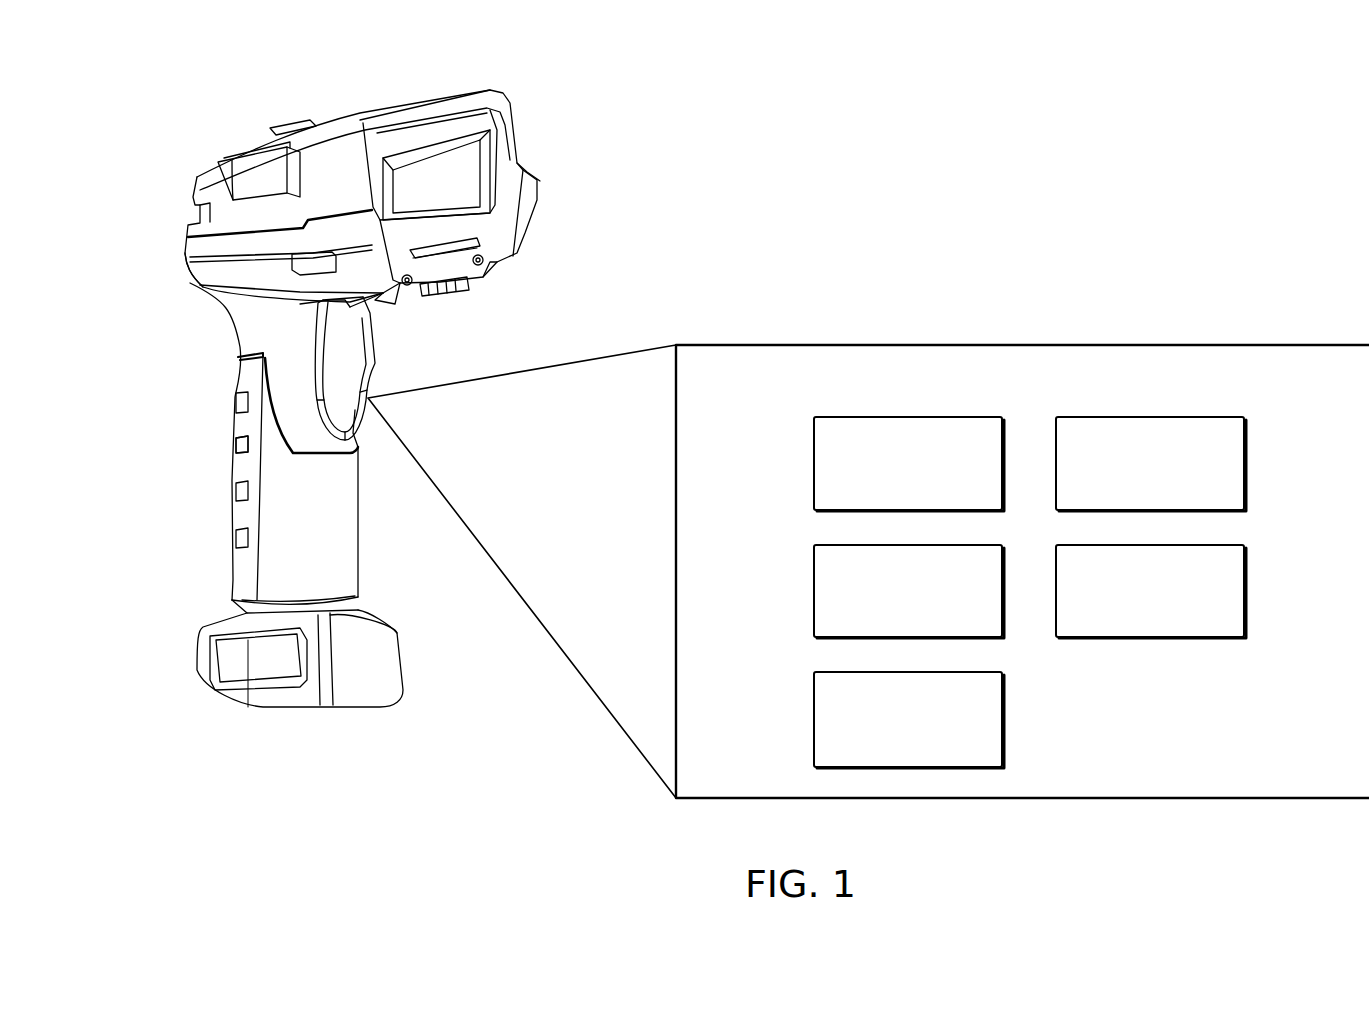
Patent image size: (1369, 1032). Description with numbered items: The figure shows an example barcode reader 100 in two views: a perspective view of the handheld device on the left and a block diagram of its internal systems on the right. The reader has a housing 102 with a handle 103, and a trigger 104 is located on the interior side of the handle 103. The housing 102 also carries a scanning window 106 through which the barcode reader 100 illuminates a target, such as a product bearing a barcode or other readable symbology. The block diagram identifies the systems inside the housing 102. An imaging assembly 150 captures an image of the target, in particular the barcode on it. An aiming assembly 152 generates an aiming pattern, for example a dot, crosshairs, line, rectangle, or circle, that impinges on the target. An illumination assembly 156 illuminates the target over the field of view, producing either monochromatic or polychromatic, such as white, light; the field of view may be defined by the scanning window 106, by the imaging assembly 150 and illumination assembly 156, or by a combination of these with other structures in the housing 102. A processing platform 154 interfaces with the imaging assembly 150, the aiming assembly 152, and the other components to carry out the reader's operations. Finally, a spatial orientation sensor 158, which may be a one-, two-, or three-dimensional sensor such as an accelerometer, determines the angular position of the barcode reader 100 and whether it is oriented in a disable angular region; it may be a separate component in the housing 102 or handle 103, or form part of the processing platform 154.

The barcode reader 100 is at (166, 134).
The housing 102 is at (203, 272).
The handle 103 is at (240, 456).
The trigger 104 is at (362, 348).
The scanning window 106 is at (428, 178).
The imaging assembly 150 is at (814, 462).
The aiming assembly 152 is at (814, 589).
The processing platform 154 is at (1248, 592).
The illumination assembly 156 is at (1248, 465).
The spatial orientation sensor 158 is at (814, 716).